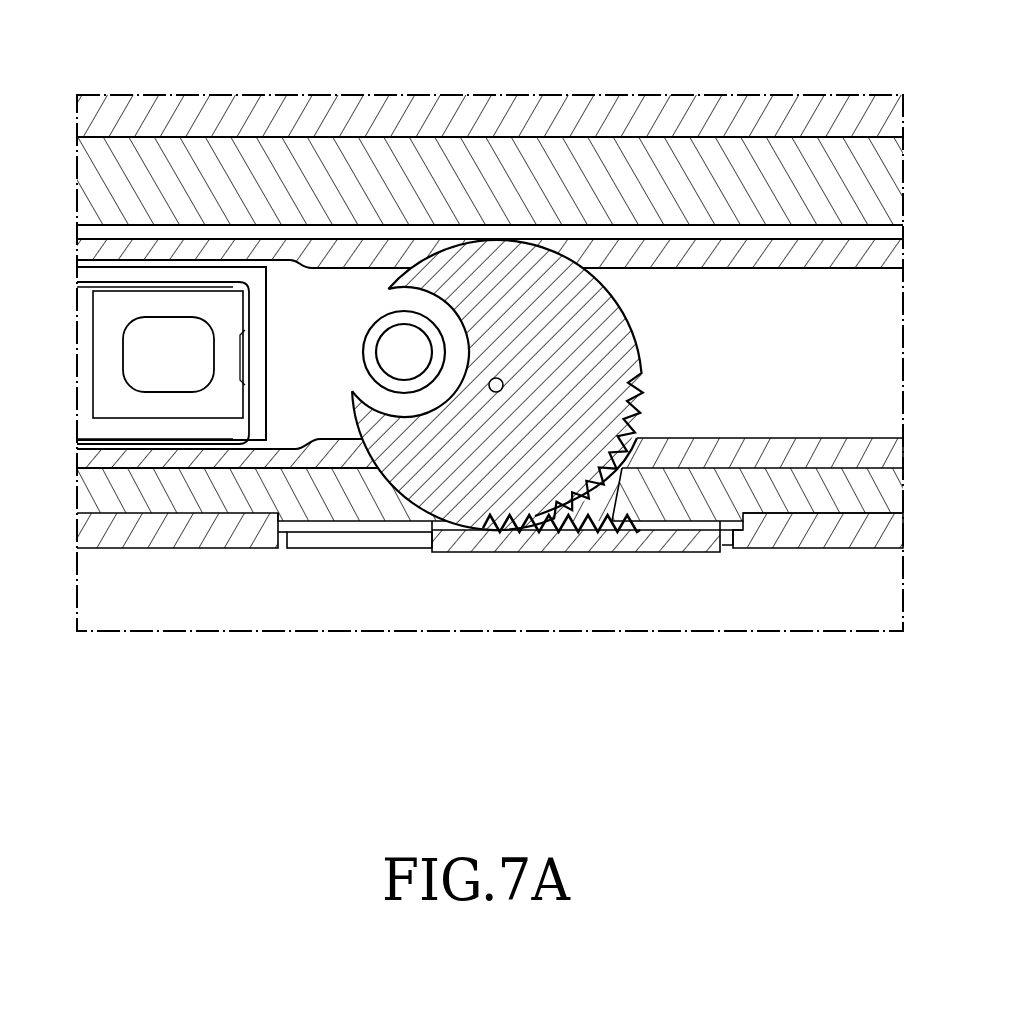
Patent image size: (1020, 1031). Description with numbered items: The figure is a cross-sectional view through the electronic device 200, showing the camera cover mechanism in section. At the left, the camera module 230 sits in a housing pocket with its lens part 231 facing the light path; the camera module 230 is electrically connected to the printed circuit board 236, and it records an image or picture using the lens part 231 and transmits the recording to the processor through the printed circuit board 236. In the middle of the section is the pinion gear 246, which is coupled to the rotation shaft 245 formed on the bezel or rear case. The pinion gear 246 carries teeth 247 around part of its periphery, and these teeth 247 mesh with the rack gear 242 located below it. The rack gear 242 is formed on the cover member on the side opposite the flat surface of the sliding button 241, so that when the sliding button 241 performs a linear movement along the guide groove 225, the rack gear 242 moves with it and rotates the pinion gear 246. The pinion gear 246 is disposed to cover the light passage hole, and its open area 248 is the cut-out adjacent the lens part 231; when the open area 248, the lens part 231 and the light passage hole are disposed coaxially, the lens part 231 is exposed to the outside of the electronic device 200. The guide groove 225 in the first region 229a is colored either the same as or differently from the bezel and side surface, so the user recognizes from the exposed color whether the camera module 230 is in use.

The electronic device 200 is at (490, 327).
The guide groove 225 is at (343, 548).
The first region 229a is at (303, 548).
The camera module 230 is at (375, 368).
The lens part 231 is at (388, 342).
The printed circuit board 236 is at (100, 397).
The sliding button 241 is at (707, 550).
The rack gear 242 is at (641, 528).
The rotation shaft 245 is at (497, 392).
The pinion gear 246 is at (590, 458).
The teeth 247 is at (583, 525).
The open area 248 is at (425, 402).